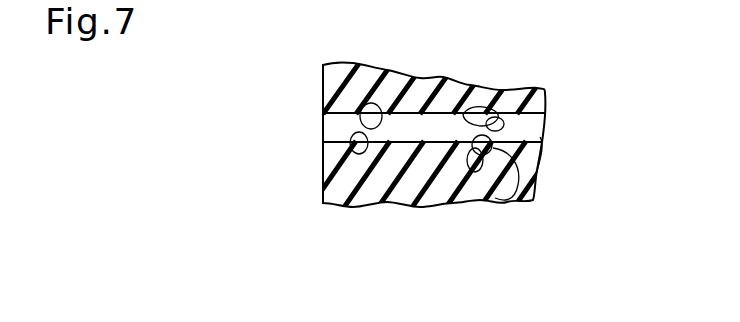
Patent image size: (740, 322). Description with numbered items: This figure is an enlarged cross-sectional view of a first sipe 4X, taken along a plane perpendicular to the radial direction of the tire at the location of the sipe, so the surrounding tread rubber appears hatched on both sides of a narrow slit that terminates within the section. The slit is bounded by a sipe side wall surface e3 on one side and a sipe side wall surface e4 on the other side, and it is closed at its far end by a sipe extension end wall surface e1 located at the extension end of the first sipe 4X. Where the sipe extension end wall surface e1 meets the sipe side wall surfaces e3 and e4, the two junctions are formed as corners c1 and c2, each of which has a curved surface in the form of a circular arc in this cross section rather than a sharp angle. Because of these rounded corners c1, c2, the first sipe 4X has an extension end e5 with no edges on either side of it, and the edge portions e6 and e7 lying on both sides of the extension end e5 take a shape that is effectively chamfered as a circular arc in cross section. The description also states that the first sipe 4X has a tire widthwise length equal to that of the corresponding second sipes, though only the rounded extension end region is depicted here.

The first sipe 4X is at (318, 127).
The sipe extension end wall surface e1 is at (463, 115).
The sipe side wall surface e3 is at (373, 104).
The sipe side wall surface e4 is at (353, 154).
The extension end e5 is at (540, 137).
The edge portion e6 is at (491, 136).
The edge portion e7 is at (527, 125).
The corner c1 is at (487, 119).
The corner c2 is at (472, 170).